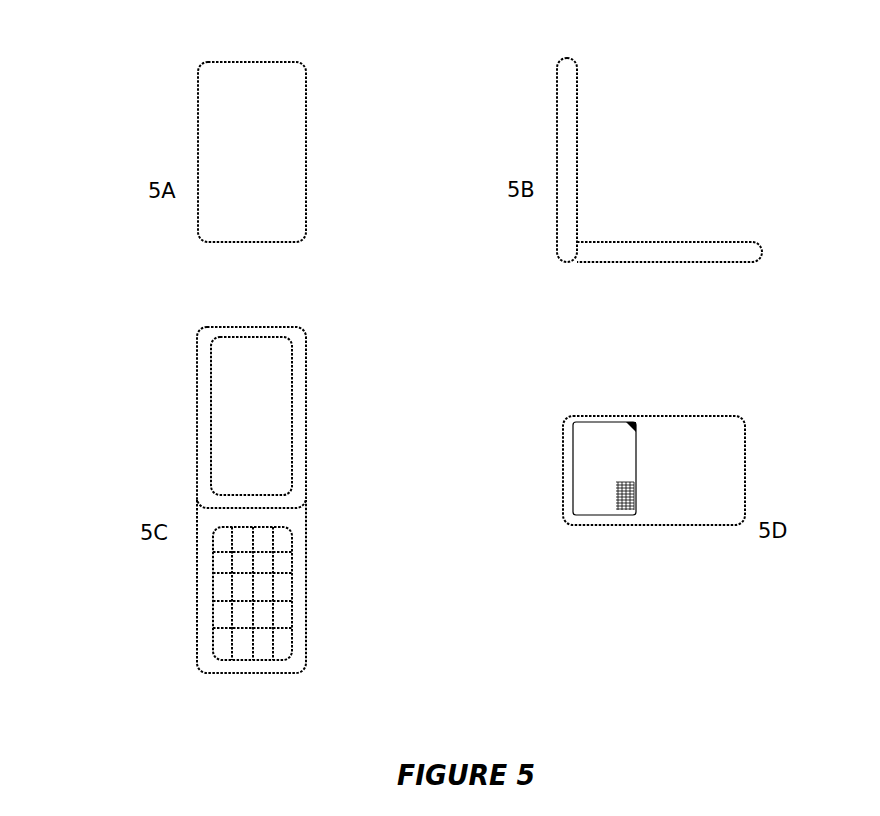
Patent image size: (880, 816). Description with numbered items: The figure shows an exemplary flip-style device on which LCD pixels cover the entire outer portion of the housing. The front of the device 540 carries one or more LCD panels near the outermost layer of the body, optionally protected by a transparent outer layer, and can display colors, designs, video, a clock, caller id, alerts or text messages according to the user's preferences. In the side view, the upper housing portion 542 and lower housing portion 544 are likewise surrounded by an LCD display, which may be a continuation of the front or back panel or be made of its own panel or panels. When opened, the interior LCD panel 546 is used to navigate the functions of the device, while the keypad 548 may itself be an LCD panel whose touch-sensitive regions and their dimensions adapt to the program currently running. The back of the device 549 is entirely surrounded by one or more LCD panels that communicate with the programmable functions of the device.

The front cover of mobile device (closed) 540 is at (168, 132).
The upper housing portion (side view) 542 is at (642, 151).
The lower housing portion (side view) 544 is at (700, 206).
The interior LCD panel 546 is at (322, 397).
The keypad 548 is at (331, 569).
The back cover with label 549 is at (709, 445).